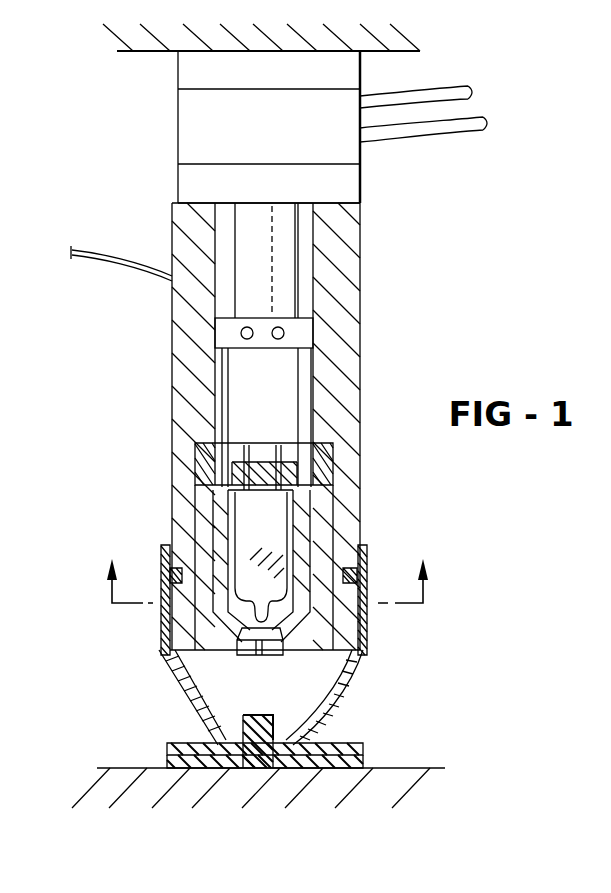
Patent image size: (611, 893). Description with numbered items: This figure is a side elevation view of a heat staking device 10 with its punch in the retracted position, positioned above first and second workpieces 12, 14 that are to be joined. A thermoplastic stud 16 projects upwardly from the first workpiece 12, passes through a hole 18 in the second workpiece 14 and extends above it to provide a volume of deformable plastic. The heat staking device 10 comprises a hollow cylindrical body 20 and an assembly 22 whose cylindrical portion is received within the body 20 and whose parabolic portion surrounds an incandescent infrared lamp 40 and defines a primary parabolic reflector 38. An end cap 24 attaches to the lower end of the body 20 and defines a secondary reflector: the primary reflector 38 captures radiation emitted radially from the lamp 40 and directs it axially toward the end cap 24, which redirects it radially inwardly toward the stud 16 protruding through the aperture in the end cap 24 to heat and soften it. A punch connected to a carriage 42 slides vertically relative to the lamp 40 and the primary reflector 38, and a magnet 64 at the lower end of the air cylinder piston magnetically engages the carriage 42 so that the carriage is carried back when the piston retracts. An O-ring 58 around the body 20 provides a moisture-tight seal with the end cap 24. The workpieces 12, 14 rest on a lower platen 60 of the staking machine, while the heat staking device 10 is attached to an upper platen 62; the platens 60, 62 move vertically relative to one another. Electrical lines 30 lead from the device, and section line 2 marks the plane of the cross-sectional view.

The heat staking device 10 is at (535, 178).
The first workpiece 12 is at (367, 765).
The second workpiece 14 is at (368, 745).
The stud 16 is at (252, 727).
The hole 18 is at (258, 770).
The body 20 is at (360, 368).
The assembly 22 is at (333, 483).
The end cap 24 is at (377, 650).
The tubes 30 is at (430, 100).
The primary parabolic reflector 38 is at (168, 653).
The incandescent lamp 40 is at (272, 587).
The carriage 42 is at (320, 393).
The O-ring 58 is at (366, 568).
The lower platen 60 is at (380, 788).
The upper platen 62 is at (312, 40).
The magnet 64 is at (262, 317).
The section line 2- 2 is at (268, 581).